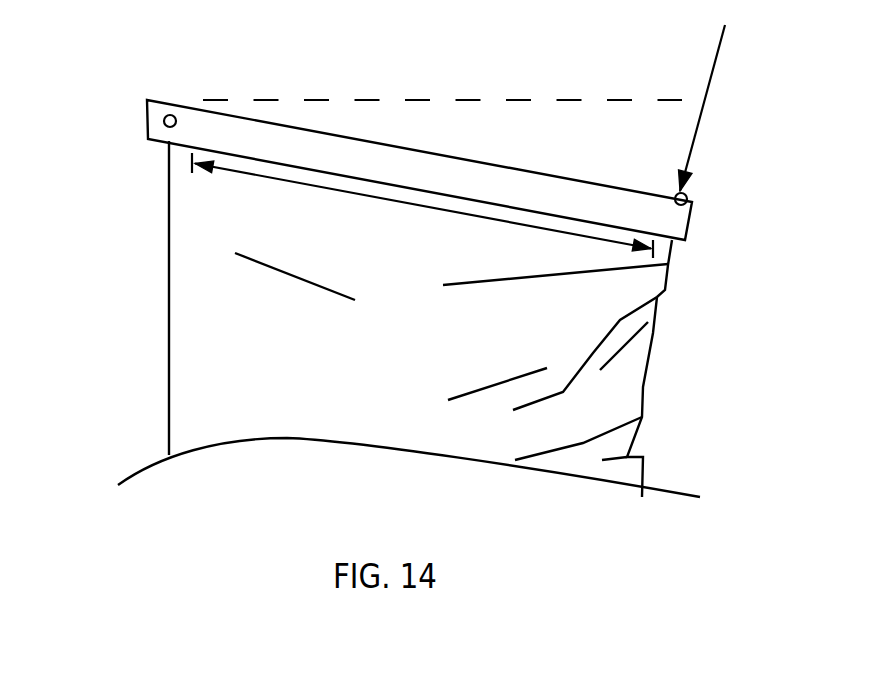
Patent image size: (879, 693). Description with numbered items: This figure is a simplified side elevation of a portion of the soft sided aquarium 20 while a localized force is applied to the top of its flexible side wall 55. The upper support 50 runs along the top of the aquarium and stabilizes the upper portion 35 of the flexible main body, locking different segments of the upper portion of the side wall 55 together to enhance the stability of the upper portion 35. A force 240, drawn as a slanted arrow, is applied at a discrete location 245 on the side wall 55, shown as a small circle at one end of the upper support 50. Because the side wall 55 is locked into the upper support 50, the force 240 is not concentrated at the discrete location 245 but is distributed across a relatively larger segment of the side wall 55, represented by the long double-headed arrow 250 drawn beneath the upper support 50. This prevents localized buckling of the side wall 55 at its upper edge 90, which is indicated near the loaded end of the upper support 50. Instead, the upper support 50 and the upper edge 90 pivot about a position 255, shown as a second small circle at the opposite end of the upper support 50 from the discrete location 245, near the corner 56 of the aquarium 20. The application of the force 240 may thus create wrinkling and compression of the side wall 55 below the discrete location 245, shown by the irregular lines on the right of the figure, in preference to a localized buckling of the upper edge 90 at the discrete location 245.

The soft sided aquarium 20 is at (66, 353).
The upper portion 35 is at (150, 238).
The upper support 50 is at (424, 146).
The flexible side wall 55 is at (659, 332).
The upper corner of wall 56 is at (163, 143).
The upper edge 90 is at (642, 194).
The force 240 is at (723, 42).
The discrete location 245 is at (688, 198).
The arrow 250 is at (358, 196).
The position 255 is at (165, 117).